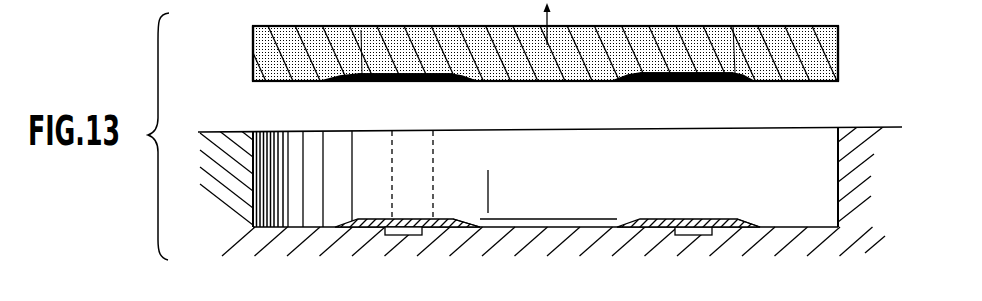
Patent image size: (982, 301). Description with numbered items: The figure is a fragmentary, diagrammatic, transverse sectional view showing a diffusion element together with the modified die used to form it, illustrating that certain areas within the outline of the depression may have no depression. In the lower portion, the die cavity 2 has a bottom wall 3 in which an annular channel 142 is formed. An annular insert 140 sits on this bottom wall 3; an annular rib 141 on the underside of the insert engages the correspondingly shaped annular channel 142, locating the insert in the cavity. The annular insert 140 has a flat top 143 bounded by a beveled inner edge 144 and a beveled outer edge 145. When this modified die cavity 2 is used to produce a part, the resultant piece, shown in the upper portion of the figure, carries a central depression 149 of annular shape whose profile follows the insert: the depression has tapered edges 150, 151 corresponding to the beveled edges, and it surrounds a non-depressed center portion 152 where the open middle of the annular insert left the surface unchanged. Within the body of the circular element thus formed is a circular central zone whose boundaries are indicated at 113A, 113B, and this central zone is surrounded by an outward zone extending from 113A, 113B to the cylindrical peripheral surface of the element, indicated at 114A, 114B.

The die cavity 2 is at (792, 197).
The bottom wall 3 is at (300, 232).
The central zone boundary 113A is at (360, 88).
The central zone boundary 113B is at (752, 80).
The cylindrical peripheral surface 114A is at (253, 60).
The cylindrical peripheral surface 114B is at (838, 50).
The annular insert 140 is at (565, 204).
The annular rib 141 is at (413, 237).
The annular channel 142 is at (392, 237).
The flat top 143 is at (683, 218).
The beveled inner edge 144 is at (748, 226).
The beveled outer edge 145 is at (478, 220).
The central depression 149 is at (427, 90).
The tapered edge 150 is at (452, 83).
The tapered edge 151 is at (707, 84).
The non-depressed center portion 152 is at (573, 83).